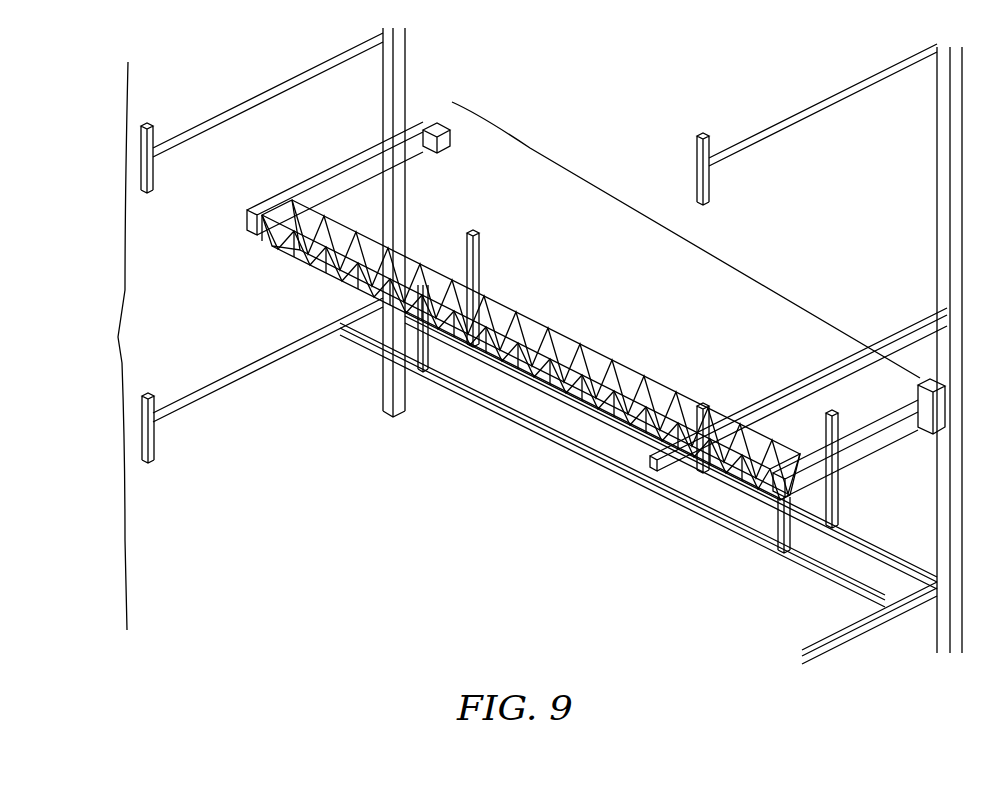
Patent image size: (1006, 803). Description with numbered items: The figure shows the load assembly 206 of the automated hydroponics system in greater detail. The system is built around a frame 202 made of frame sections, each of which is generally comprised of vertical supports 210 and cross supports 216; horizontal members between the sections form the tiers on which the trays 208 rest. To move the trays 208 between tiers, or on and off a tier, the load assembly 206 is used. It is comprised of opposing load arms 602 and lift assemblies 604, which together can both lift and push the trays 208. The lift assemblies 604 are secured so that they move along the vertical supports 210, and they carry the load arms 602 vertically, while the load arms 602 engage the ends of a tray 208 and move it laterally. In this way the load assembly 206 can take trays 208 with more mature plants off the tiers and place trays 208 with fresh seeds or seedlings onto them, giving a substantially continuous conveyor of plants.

The frame 202 is at (481, 346).
The load assembly 206 is at (798, 302).
The tray 208 is at (578, 335).
The vertical support 210 is at (937, 218).
The cross support 216 is at (218, 395).
The load arm 602 is at (893, 440).
The lift assembly 604 is at (924, 368).